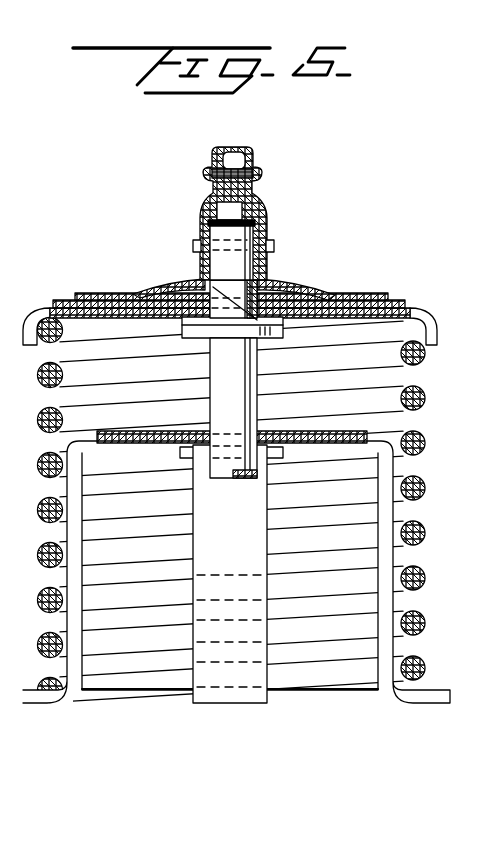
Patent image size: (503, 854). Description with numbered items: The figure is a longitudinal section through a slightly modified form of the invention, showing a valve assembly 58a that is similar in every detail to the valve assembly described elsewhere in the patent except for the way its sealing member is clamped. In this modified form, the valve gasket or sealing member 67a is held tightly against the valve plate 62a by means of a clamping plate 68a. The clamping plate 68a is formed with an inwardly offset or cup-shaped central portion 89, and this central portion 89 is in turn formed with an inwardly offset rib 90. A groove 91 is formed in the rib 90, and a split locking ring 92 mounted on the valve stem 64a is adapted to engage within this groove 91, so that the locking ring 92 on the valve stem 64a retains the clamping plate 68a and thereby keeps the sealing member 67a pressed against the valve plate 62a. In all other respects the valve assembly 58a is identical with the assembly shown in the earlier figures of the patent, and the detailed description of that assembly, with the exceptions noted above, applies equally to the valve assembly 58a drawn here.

The valve assembly 58a is at (450, 420).
The valve plate 62a is at (404, 312).
The valve stem 64a is at (212, 369).
The valve gasket or sealing member 67a is at (399, 300).
The clamping plate 68a is at (336, 296).
The cup-shaped central portion 89 is at (291, 285).
The inwardly offset rib 90 is at (263, 289).
The groove 91 is at (234, 269).
The split locking ring 92 is at (283, 331).